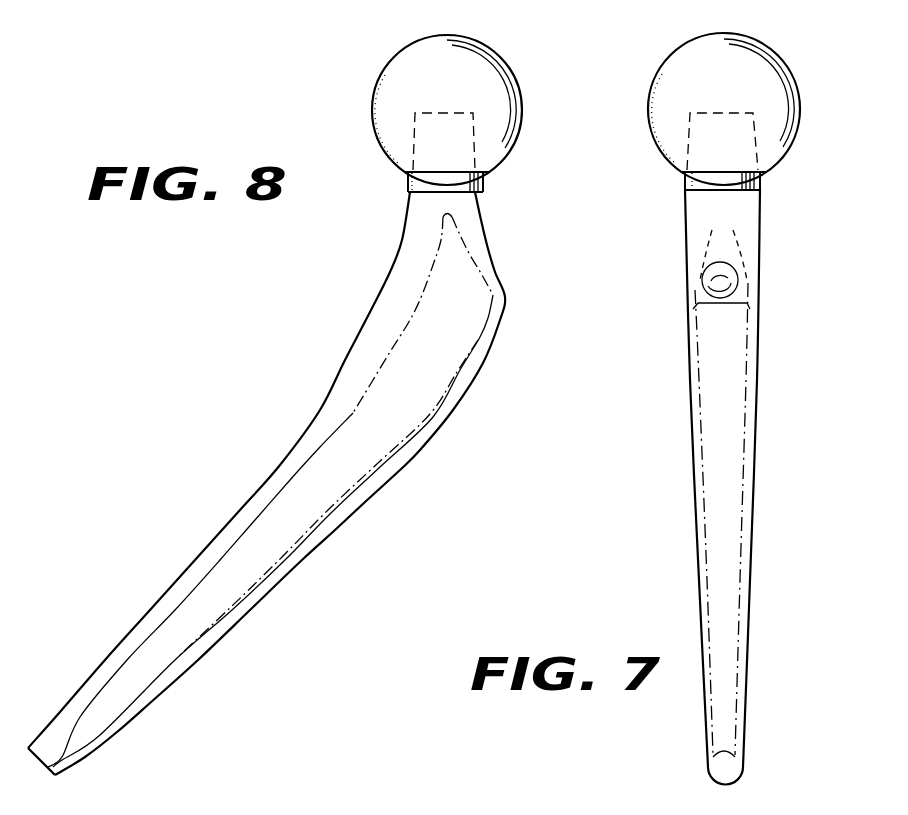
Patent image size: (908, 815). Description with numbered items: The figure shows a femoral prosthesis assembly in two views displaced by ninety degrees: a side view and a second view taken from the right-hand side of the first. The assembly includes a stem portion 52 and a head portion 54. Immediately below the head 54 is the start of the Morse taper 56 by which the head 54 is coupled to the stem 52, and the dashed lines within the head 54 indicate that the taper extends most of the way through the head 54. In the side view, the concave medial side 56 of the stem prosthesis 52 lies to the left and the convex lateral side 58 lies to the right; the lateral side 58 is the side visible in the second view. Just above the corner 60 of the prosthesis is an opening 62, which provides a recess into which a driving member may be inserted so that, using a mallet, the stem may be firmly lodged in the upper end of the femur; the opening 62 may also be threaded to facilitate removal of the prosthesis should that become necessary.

In FIG. 8, the stem portion 52 is at (308, 501).
In FIG. 8, the head portion 54 is at (397, 72).
In FIG. 7, the head portion 54 is at (677, 55).
In FIG. 8, the Morse taper 56 is at (418, 145).
In FIG. 7, the Morse taper 56 is at (753, 132).
In FIG. 8, the convex lateral side 58 is at (417, 437).
In FIG. 8, the corner 60 is at (505, 297).
In FIG. 7, the corner 60 is at (723, 305).
In FIG. 7, the opening 62 is at (723, 280).